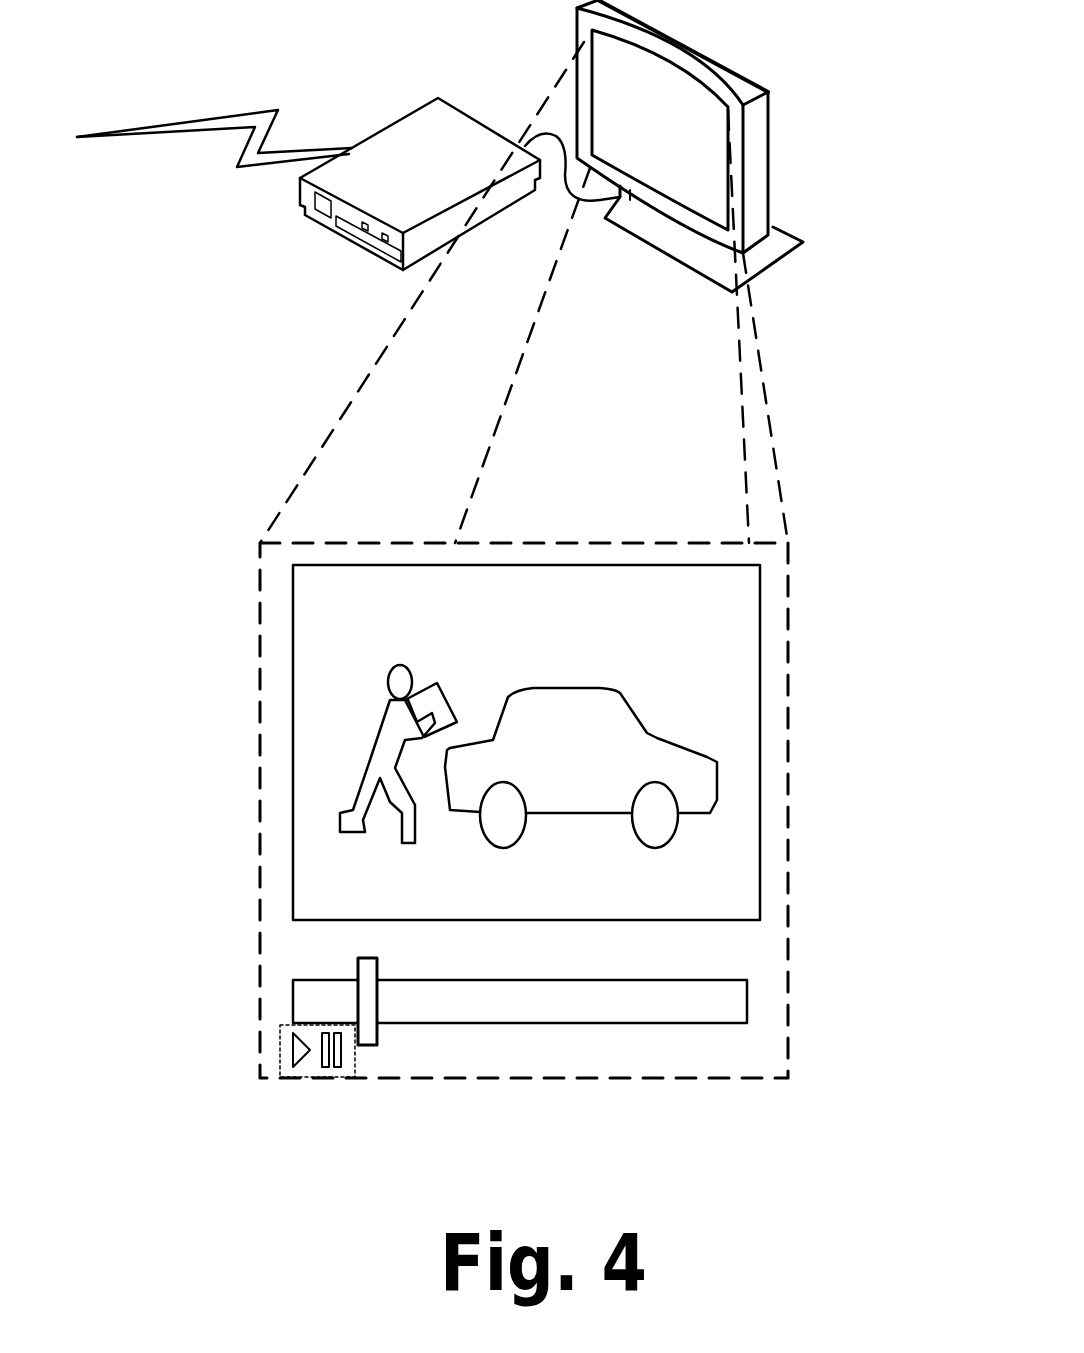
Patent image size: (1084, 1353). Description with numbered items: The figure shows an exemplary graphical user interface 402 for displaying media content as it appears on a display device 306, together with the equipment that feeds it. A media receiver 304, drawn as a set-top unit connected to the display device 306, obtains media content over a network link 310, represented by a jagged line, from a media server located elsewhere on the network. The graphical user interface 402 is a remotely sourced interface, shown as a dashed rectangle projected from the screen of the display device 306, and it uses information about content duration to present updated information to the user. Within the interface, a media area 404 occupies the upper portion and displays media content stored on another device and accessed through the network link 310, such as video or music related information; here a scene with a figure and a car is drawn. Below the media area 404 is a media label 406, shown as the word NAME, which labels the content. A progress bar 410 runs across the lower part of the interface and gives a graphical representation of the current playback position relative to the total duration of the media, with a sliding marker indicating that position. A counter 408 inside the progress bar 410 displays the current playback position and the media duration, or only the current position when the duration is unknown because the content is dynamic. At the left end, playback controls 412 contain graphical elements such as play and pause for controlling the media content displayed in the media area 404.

The network link 310 is at (217, 118).
The media receiver 304 is at (473, 216).
The display device 306 is at (753, 148).
The graphical user interface 402 is at (520, 1080).
The media area 404 is at (687, 565).
The media label 406 is at (618, 945).
The counter 408 is at (745, 1008).
The progress bar 410 is at (371, 1052).
The playback controls 412 is at (280, 1048).